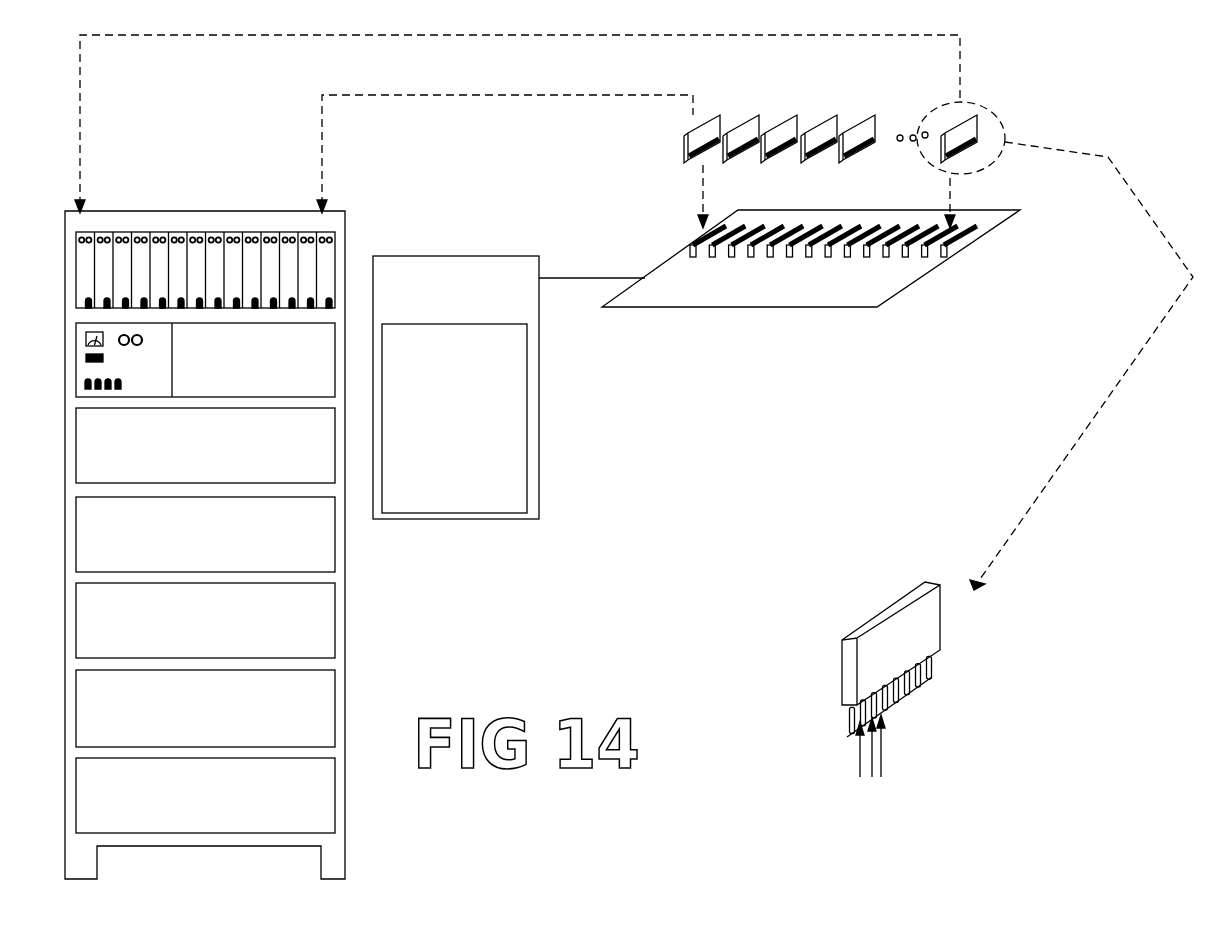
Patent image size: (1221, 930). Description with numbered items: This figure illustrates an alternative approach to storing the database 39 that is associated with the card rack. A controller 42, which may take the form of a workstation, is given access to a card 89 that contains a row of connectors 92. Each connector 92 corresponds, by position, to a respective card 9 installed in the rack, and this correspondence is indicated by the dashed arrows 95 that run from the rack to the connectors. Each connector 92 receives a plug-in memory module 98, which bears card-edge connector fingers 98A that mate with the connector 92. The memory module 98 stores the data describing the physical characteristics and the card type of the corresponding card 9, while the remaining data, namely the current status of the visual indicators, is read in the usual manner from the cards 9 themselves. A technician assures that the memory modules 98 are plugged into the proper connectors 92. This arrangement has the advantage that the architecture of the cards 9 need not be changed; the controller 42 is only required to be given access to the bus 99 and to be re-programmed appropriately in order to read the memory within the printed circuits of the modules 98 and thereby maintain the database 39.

The card 9 is at (95, 218).
The dashed arrows 95 is at (385, 35).
The controller 42 is at (539, 348).
The database 39 is at (527, 465).
The bus 99 is at (590, 278).
The card 89 is at (897, 293).
The connectors 92 is at (691, 257).
The plug-in memory module 98 is at (940, 612).
The card-edge connector fingers 98A is at (880, 763).